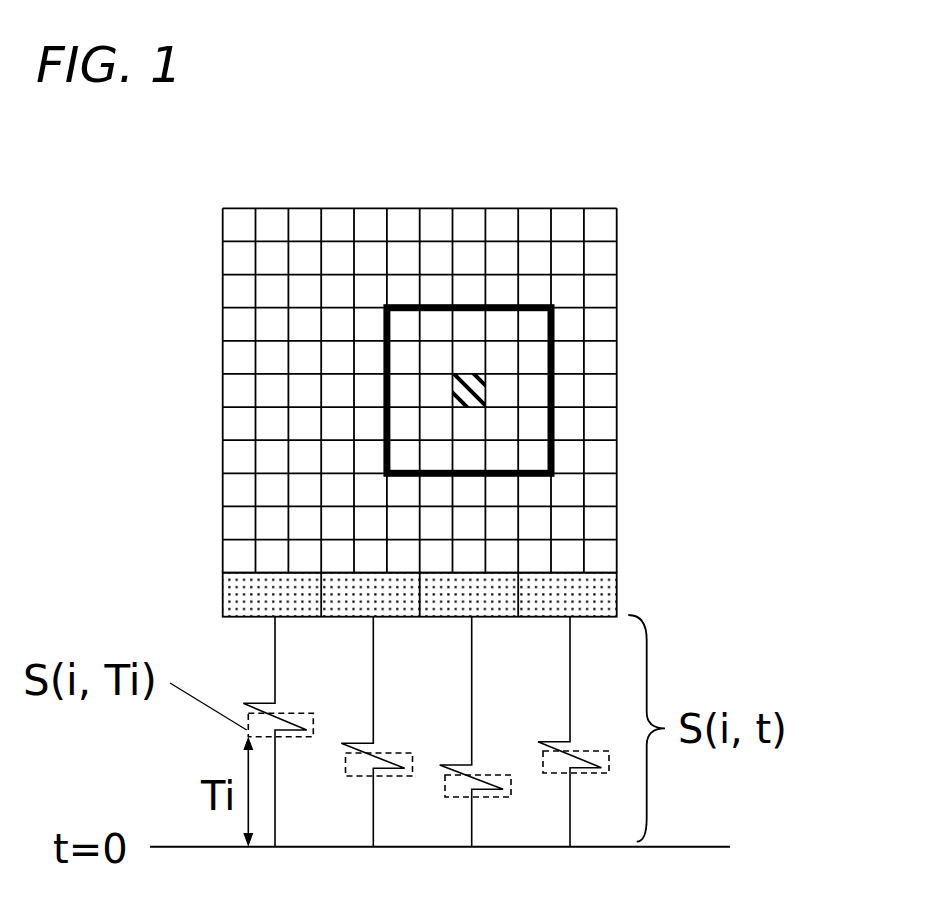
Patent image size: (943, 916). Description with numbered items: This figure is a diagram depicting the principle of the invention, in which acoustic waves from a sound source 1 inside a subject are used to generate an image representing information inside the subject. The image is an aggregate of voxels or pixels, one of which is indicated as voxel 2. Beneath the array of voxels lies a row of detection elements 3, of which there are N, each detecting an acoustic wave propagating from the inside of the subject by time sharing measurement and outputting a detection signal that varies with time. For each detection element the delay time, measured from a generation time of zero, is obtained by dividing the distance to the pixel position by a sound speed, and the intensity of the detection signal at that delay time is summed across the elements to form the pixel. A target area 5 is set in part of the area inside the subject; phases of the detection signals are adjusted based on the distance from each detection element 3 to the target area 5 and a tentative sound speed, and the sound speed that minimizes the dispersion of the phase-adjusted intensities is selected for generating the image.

The sound source 1 is at (485, 391).
The voxel 2 is at (242, 218).
The detection element 3 is at (597, 592).
The target area 5 is at (555, 360).